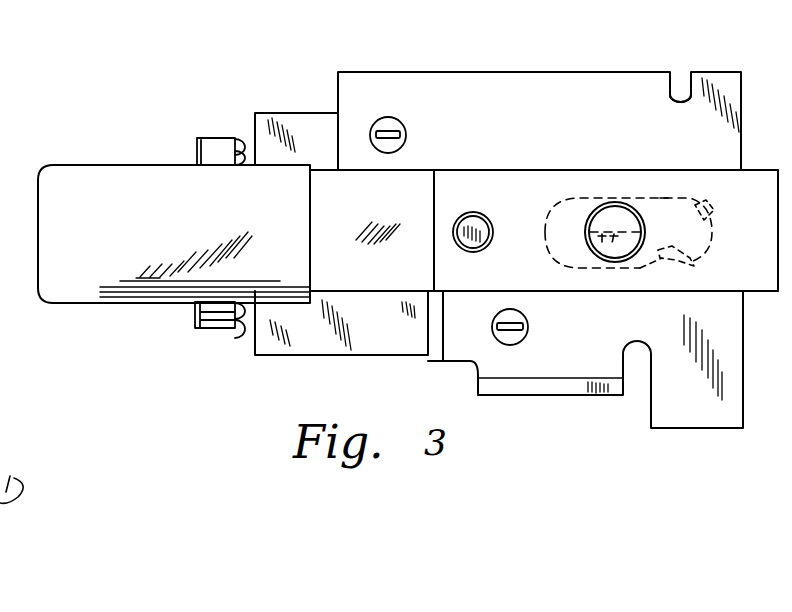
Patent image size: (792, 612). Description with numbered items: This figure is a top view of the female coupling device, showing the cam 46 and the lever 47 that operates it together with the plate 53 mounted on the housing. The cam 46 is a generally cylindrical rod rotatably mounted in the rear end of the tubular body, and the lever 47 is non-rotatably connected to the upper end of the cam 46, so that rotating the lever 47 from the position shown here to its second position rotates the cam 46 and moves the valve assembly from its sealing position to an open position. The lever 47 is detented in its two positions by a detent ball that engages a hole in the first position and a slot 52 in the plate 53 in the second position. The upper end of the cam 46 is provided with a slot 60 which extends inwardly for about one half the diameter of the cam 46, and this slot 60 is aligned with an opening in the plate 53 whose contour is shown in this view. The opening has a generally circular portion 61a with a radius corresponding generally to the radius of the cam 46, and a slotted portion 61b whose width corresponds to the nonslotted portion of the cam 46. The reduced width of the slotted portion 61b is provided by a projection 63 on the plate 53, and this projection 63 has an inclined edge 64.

The cam 46 is at (620, 216).
The lever 47 is at (549, 178).
The slot 52 is at (681, 76).
The plate 53 is at (520, 42).
The slot 60 is at (592, 253).
The circular portion 61a is at (706, 208).
The slotted portion 61b is at (663, 201).
The projection 63 is at (661, 252).
The inclined edge 64 is at (690, 264).